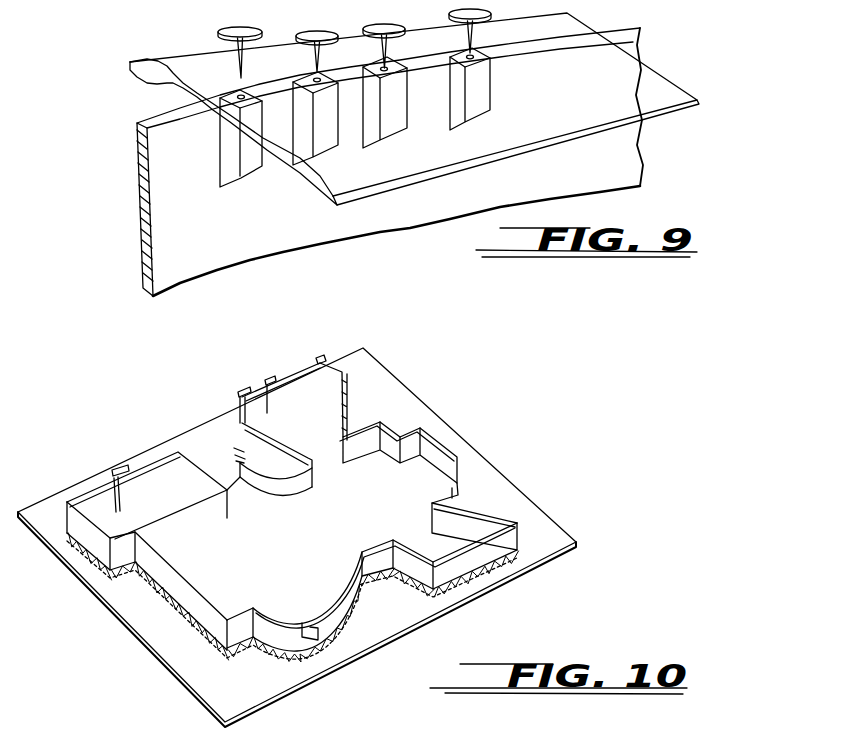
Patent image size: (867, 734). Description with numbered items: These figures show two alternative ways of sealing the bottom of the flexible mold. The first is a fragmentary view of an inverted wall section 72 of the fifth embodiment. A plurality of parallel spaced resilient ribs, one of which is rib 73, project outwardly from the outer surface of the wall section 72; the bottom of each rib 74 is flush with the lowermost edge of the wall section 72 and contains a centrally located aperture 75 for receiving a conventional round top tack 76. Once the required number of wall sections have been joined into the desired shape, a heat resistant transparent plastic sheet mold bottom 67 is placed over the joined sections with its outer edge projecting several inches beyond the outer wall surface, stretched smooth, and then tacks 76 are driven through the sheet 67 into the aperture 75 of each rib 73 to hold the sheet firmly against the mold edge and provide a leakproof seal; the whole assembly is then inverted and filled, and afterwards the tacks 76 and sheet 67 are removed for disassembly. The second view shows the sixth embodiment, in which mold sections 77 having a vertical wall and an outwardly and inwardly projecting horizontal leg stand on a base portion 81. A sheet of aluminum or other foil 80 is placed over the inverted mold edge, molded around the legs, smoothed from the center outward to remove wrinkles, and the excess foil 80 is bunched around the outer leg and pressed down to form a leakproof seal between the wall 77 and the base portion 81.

In FIG. 9, the heat resistant transparent plastic sheet mold bottom 67 is at (673, 103).
In FIG. 9, the wall section 72 is at (640, 28).
In FIG. 9, the rib 73 is at (246, 160).
In FIG. 9, the bottom of rib 74 is at (237, 96).
In FIG. 9, the aperture 75 is at (240, 94).
In FIG. 9, the tack 76 is at (249, 28).
In FIG. 10, the mold section 77 is at (427, 437).
In FIG. 10, the foil sheet 80 is at (305, 634).
In FIG. 10, the base portion 81 is at (543, 542).